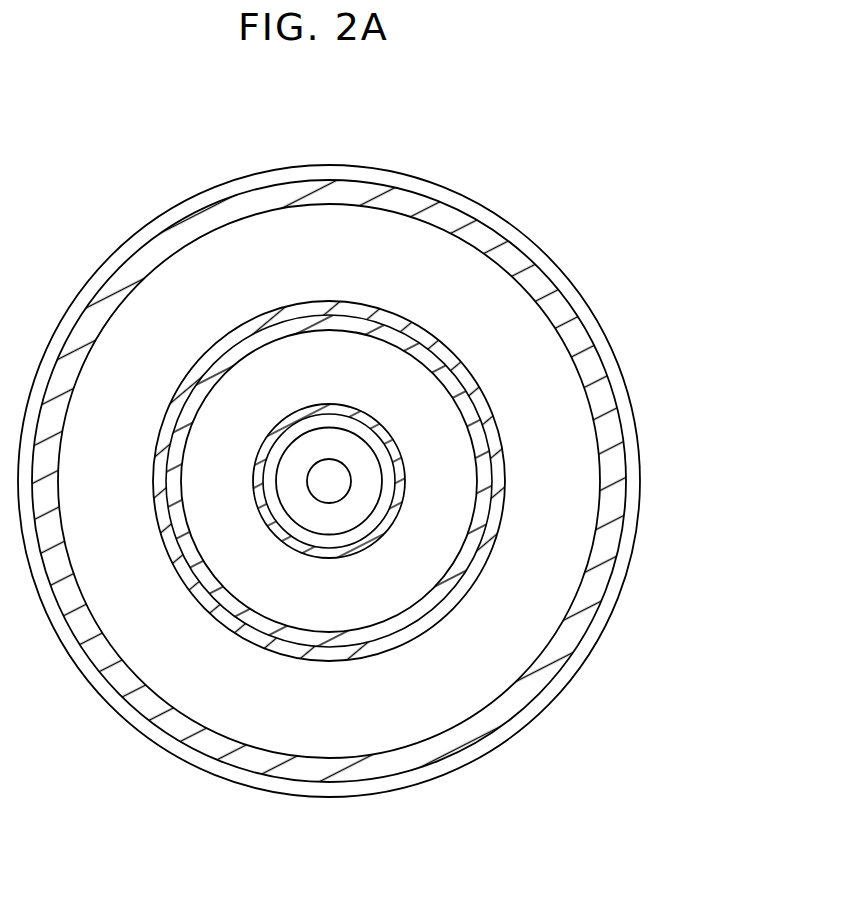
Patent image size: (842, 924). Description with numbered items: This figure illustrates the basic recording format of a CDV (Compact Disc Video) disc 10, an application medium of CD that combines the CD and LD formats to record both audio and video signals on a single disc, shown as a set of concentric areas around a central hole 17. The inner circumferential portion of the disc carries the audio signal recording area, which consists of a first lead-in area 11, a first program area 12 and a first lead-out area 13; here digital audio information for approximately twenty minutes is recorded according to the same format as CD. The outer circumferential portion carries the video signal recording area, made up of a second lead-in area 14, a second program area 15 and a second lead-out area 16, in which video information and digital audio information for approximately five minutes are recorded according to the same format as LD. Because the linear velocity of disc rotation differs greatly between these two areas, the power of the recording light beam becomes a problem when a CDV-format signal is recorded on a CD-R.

The cylindrical structure 10 is at (449, 189).
The first lead-in area 11 is at (292, 542).
The first program area 12 is at (241, 593).
The first lead-out area 13 is at (228, 362).
The second lead-in area 14 is at (259, 643).
The second program area 15 is at (440, 708).
The second lead-out area 16 is at (360, 777).
The central bore 17 is at (322, 481).